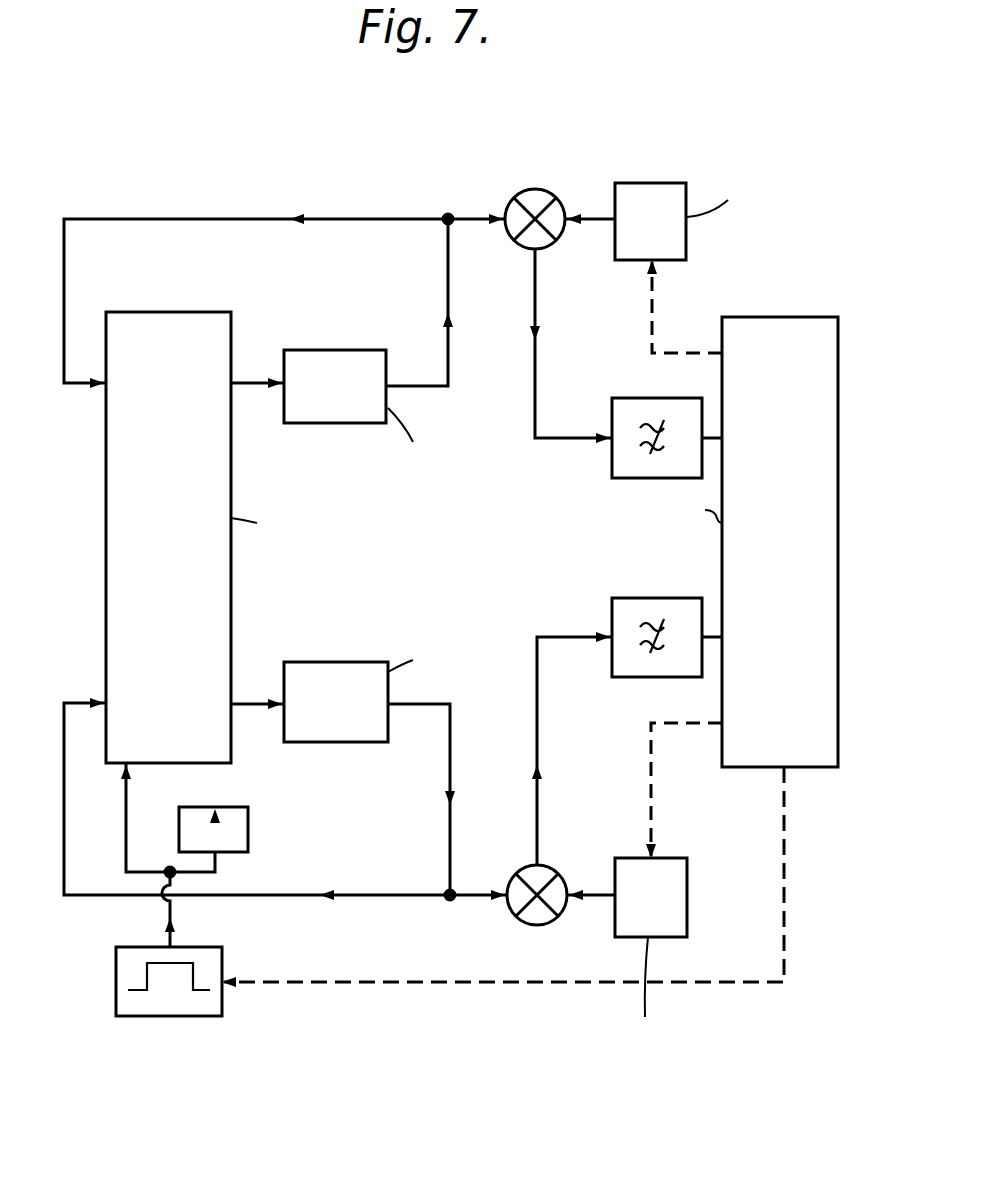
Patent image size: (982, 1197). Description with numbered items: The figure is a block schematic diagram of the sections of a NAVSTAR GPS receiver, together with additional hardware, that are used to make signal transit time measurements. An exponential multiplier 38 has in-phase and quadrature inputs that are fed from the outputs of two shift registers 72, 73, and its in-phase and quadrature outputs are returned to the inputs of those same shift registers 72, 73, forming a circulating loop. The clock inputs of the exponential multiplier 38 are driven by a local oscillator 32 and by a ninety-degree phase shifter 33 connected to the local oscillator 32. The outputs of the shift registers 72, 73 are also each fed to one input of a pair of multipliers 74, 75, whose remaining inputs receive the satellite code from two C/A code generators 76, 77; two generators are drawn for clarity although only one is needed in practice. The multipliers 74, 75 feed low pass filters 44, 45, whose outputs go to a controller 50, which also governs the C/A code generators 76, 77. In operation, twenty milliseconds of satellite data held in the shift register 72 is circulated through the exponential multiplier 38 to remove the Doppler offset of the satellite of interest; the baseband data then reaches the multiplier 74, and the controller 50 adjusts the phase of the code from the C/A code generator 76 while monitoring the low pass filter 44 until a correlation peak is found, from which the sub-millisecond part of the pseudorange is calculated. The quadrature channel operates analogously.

The local oscillator 32 is at (178, 1016).
The 90° phase shifter 33 is at (248, 824).
The exponential multiplier 38 is at (190, 312).
The low pass filter 44 is at (630, 398).
The low pass filter 45 is at (636, 598).
The controller 50 is at (790, 317).
The shift register 72 is at (350, 350).
The shift register 73 is at (358, 662).
The multiplier 74 is at (540, 190).
The multiplier 75 is at (555, 868).
The C/A code generator 76 is at (665, 183).
The C/A code generator 77 is at (677, 858).